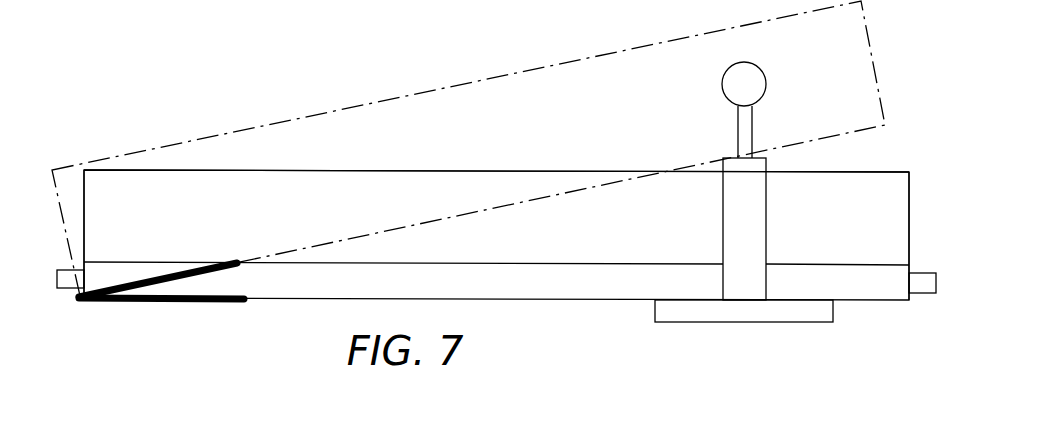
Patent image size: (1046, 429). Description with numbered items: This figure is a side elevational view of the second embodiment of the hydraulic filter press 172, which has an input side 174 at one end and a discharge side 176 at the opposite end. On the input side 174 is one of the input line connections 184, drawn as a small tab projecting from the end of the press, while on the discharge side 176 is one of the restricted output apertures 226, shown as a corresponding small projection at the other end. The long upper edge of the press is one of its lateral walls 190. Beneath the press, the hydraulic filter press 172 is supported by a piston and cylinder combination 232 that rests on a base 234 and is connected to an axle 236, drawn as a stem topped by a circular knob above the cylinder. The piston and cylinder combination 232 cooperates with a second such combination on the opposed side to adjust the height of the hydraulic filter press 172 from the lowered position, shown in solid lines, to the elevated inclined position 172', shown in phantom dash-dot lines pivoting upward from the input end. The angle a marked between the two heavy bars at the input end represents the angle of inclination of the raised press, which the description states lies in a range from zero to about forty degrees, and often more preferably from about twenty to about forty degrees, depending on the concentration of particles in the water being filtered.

The hydraulic filter press element 172 is at (496, 281).
The elevated inclined position of hydraulic filter press 172' is at (468, 148).
The input side 174 is at (88, 223).
The discharge side 176 is at (910, 199).
The input line connection 184 is at (58, 290).
The lateral wall 190 is at (845, 170).
The restricted output aperture 226 is at (929, 296).
The piston and cylinder combination 232 is at (767, 242).
The base 234 is at (744, 323).
The axle 236 is at (760, 68).
The tilt angle a is at (177, 288).